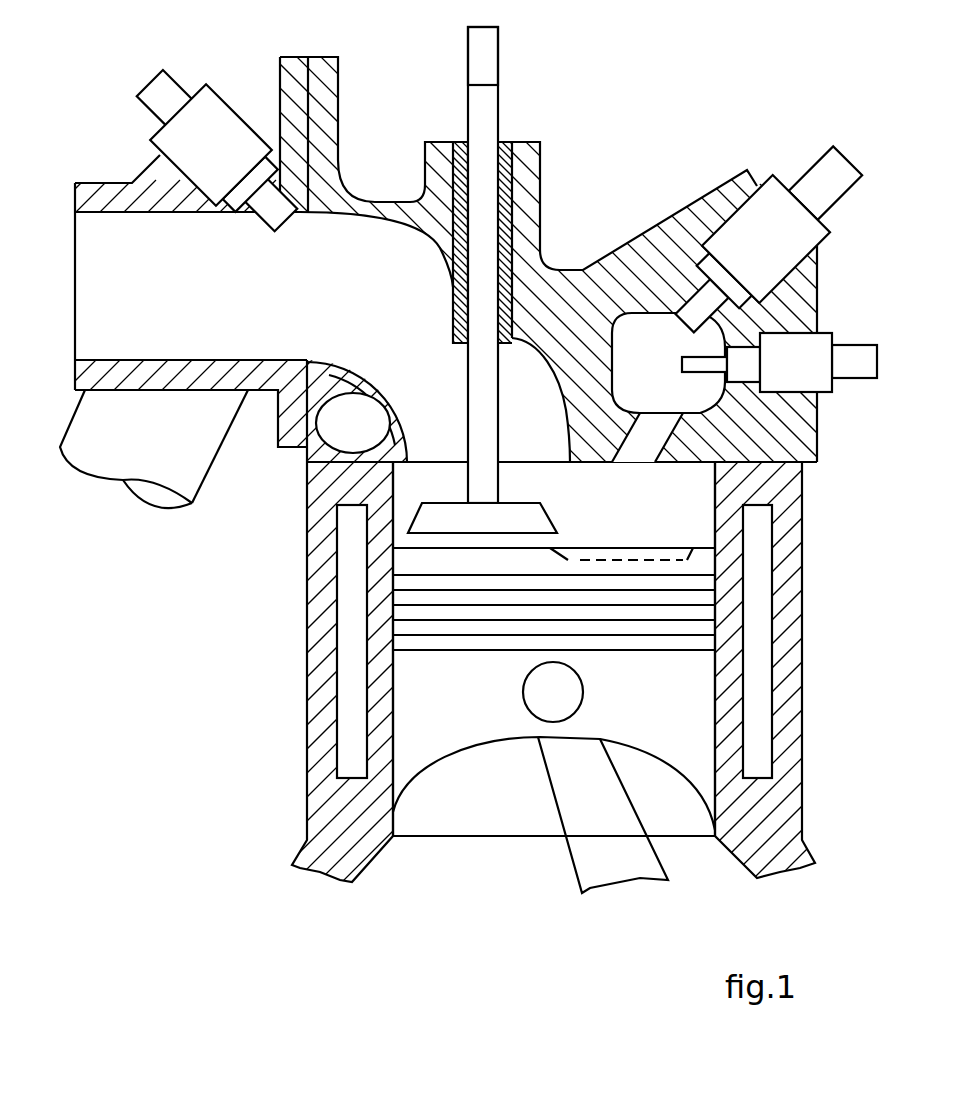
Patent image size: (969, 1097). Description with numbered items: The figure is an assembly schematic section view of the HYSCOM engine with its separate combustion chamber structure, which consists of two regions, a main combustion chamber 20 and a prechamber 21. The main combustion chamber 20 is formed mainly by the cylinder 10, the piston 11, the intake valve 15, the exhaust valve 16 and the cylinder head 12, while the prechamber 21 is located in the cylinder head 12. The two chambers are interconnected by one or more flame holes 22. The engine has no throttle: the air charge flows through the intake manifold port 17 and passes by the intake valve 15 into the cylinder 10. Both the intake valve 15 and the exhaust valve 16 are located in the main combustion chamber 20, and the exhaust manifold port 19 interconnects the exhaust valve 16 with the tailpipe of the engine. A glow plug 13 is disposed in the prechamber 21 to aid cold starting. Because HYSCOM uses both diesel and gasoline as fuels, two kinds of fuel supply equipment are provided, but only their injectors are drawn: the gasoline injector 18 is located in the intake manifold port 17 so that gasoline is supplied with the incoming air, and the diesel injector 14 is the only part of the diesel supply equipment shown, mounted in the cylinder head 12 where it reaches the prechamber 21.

The cylinder 10 is at (730, 748).
The piston 11 is at (698, 695).
The cylinder head 12 is at (765, 428).
The glow plug 13 is at (803, 375).
The diesel injector 14 is at (760, 217).
The intake valve 15 is at (488, 123).
The exhaust valve 16 is at (482, 47).
The intake manifold port 17 is at (357, 238).
The gasoline injector 18 is at (190, 117).
The exhaust manifold port 19 is at (105, 457).
The main combustion chamber 20 is at (683, 510).
The prechamber 21 is at (703, 343).
The flame hole 22 is at (652, 447).